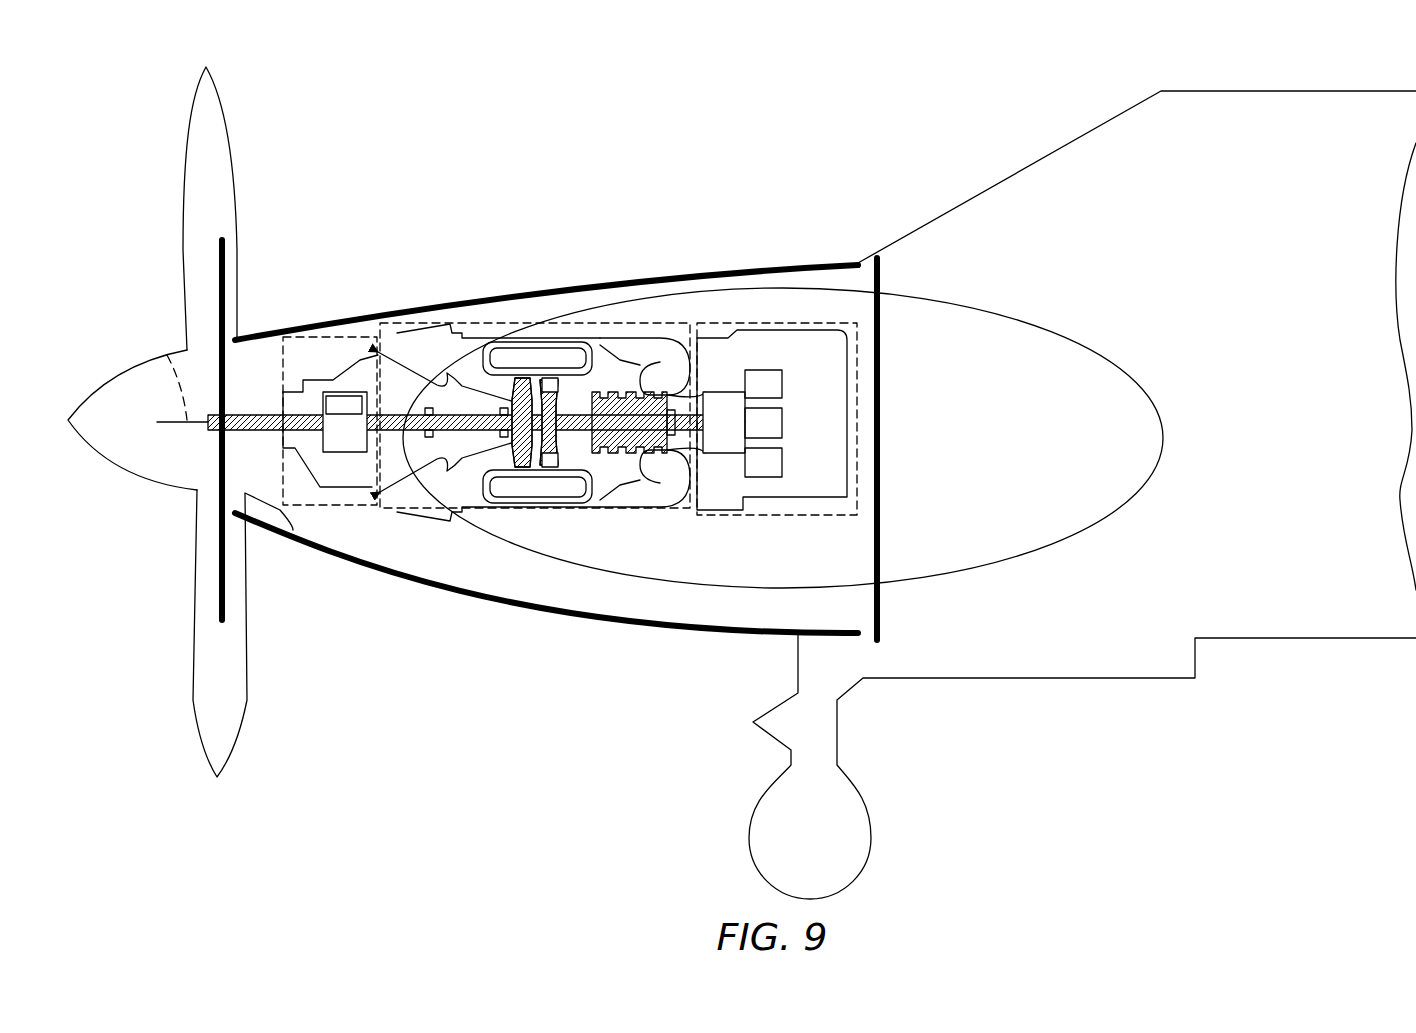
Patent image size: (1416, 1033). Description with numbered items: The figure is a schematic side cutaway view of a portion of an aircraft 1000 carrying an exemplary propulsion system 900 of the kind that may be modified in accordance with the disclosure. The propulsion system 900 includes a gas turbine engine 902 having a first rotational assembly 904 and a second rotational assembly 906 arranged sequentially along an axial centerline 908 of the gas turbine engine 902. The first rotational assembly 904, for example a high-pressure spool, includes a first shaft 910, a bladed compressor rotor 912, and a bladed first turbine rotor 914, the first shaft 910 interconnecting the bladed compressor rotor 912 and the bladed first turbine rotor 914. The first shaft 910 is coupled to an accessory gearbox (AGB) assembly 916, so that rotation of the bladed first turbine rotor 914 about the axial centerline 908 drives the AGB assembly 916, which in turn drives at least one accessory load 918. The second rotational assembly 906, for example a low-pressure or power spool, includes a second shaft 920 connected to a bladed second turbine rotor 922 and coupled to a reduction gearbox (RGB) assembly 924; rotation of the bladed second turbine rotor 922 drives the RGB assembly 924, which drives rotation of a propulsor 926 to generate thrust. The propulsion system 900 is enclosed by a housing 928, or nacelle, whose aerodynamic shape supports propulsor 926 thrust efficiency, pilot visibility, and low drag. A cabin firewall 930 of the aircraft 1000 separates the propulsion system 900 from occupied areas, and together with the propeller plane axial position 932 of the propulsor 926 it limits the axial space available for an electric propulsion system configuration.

The propulsion system 900 is at (729, 288).
The gas turbine engine 902 is at (638, 335).
The first rotational assembly 904 is at (623, 462).
The second rotational assembly 906 is at (466, 442).
The axial centerline 908 is at (170, 363).
The first shaft 910 is at (576, 368).
The bladed compressor rotor 912 is at (663, 452).
The bladed first turbine rotor 914 is at (548, 376).
The accessory gearbox (AGB) assembly 916 is at (726, 392).
The accessory load 918 is at (782, 460).
The second shaft 920 is at (458, 398).
The bladed second turbine rotor 922 is at (528, 468).
The reduction gearbox (RGB) assembly 924 is at (349, 392).
The propulsor 926 is at (185, 505).
The housing 928 is at (423, 303).
The cabin firewall 930 is at (882, 537).
The propeller plane axial position 932 is at (225, 590).
The aircraft 1000 is at (1066, 140).